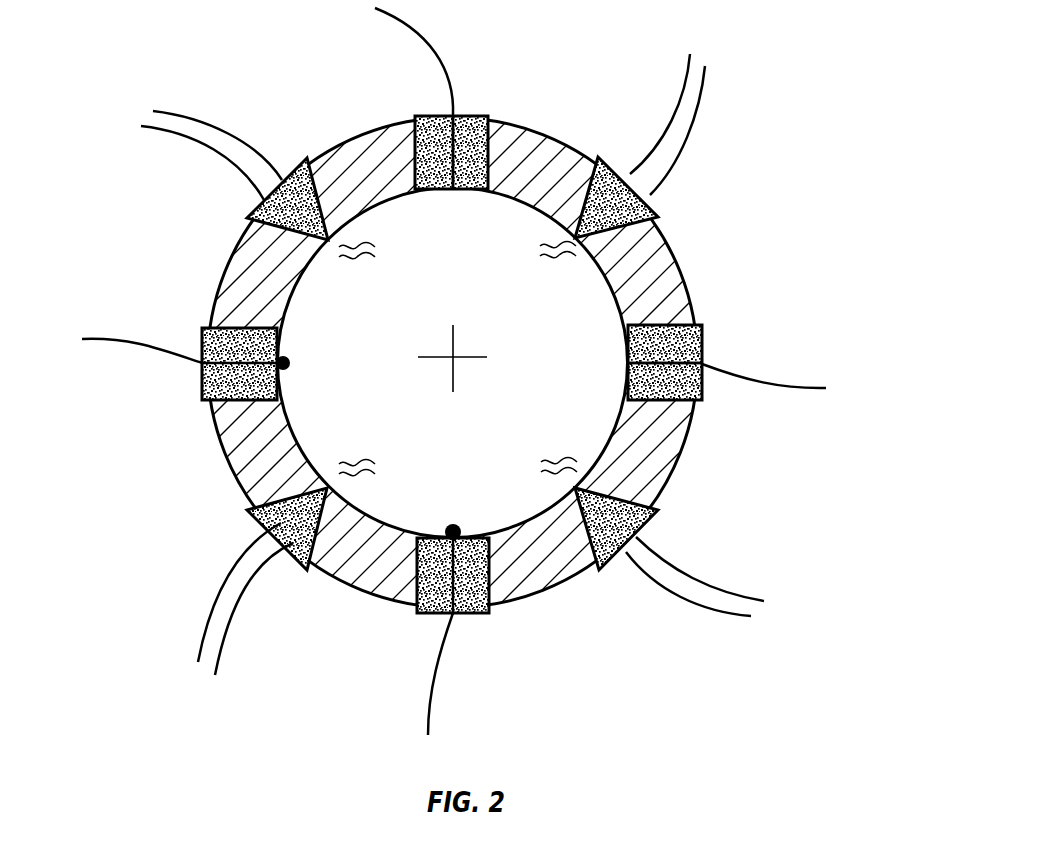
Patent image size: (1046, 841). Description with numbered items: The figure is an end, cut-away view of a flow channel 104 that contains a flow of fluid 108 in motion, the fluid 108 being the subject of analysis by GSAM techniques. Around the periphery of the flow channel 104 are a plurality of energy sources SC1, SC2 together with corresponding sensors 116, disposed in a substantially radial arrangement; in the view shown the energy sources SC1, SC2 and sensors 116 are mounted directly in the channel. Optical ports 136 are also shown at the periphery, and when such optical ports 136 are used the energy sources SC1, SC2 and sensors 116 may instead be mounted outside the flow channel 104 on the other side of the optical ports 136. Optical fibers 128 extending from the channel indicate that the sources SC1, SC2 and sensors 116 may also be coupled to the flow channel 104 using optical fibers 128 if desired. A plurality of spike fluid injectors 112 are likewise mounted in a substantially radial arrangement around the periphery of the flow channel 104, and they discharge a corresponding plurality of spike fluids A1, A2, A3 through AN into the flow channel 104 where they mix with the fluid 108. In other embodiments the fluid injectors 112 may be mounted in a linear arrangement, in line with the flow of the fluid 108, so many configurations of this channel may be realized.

The flow channel 104 is at (557, 133).
The fluid 108 is at (463, 353).
The fluid injectors 112 is at (248, 217).
The sensors 116 is at (458, 195).
The optical fibers 128 is at (435, 46).
The optical ports 136 is at (472, 115).
The energy source SC1 is at (290, 360).
The energy source SC2 is at (453, 525).
The spike fluid A1 is at (357, 461).
The spike fluid A2 is at (357, 258).
The spike fluid A3 is at (558, 258).
The spike fluid AN is at (562, 462).